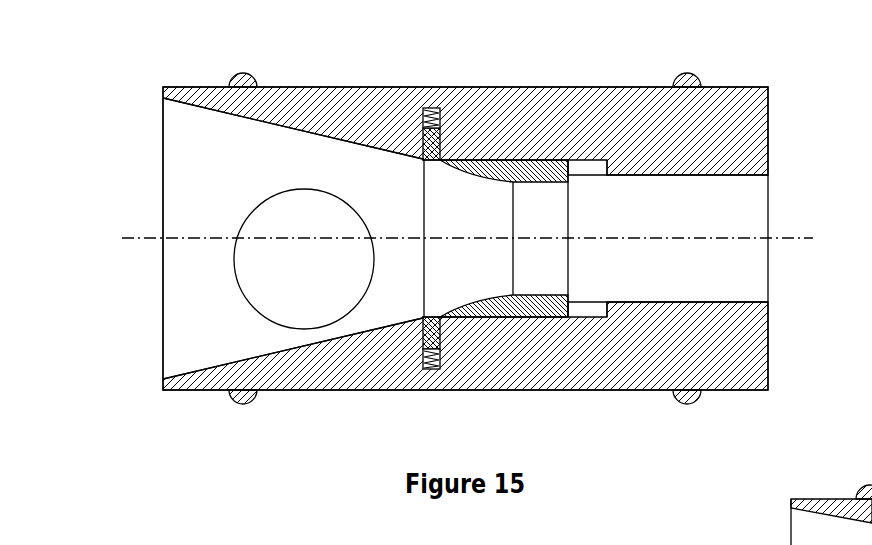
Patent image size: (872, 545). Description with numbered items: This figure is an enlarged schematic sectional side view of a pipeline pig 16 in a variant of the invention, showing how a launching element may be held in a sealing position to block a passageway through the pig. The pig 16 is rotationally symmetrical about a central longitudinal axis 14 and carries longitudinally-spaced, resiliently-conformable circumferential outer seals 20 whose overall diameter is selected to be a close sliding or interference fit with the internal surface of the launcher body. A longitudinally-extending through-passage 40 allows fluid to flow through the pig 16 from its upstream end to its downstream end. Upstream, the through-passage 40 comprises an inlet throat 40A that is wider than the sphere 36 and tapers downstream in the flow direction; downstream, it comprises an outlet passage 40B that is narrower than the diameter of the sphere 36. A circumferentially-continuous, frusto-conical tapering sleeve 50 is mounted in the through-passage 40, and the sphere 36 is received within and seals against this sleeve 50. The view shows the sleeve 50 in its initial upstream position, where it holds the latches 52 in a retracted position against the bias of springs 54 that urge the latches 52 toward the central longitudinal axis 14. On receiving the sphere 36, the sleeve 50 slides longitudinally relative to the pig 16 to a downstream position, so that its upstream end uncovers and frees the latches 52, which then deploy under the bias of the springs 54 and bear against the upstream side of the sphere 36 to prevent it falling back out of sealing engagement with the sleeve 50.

The central longitudinal axis 14 is at (793, 238).
The pig 16 is at (752, 147).
The circumferential outer seal 20 is at (240, 403).
The sphere 36 is at (272, 220).
The through-passage 40 is at (182, 198).
The inlet throat 40A is at (197, 328).
The outlet passage 40B is at (747, 213).
The tapering sleeve 50 is at (452, 220).
The latch 52 is at (420, 158).
The spring 54 is at (432, 107).